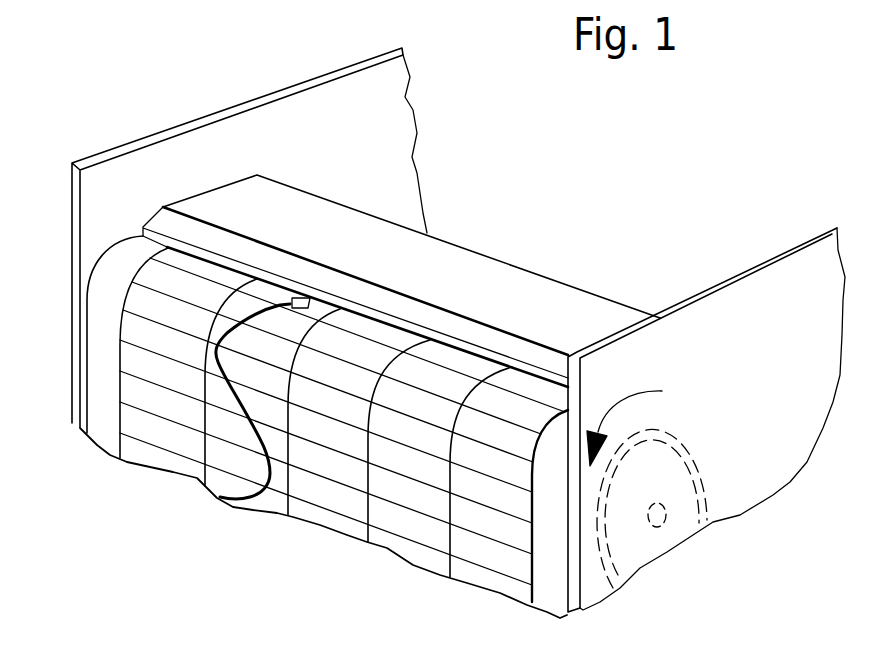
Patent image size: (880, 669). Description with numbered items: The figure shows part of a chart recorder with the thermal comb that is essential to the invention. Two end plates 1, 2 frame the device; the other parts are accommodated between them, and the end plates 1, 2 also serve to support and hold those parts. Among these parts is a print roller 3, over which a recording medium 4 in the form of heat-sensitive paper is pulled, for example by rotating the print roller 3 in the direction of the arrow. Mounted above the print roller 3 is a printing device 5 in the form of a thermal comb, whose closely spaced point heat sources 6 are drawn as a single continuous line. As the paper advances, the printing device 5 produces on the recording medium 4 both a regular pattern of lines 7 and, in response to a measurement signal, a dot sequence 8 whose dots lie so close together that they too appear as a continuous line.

The end plate 1 is at (338, 71).
The end plate 2 is at (787, 278).
The print roller 3 is at (688, 510).
The recording medium 4 is at (337, 507).
The printing device 5 is at (227, 197).
The point heat sources 6 is at (166, 246).
The pattern of lines 7 is at (449, 541).
The dot sequence 8 is at (310, 300).